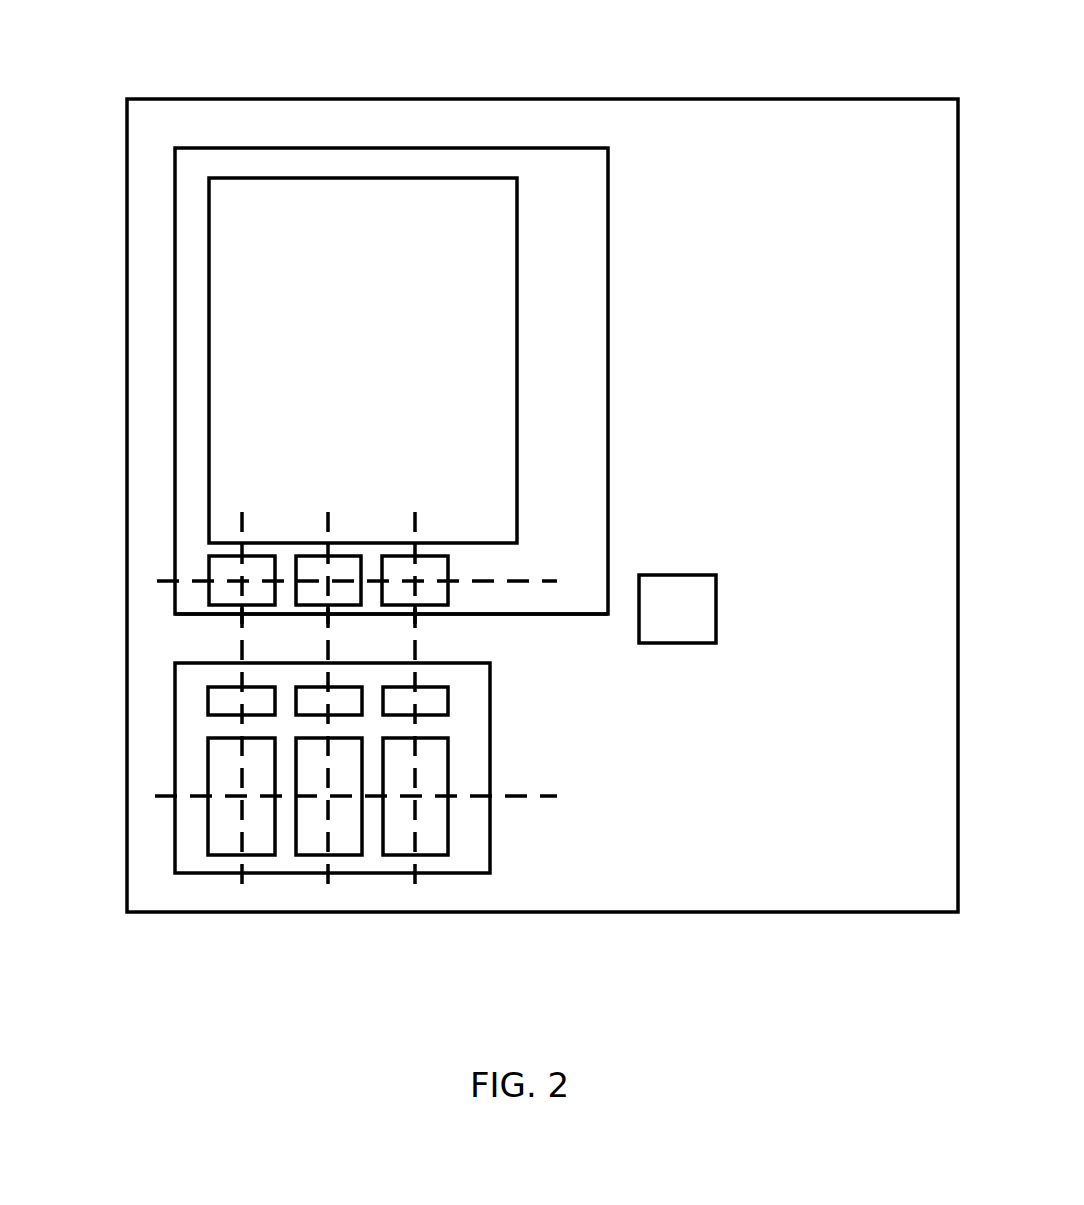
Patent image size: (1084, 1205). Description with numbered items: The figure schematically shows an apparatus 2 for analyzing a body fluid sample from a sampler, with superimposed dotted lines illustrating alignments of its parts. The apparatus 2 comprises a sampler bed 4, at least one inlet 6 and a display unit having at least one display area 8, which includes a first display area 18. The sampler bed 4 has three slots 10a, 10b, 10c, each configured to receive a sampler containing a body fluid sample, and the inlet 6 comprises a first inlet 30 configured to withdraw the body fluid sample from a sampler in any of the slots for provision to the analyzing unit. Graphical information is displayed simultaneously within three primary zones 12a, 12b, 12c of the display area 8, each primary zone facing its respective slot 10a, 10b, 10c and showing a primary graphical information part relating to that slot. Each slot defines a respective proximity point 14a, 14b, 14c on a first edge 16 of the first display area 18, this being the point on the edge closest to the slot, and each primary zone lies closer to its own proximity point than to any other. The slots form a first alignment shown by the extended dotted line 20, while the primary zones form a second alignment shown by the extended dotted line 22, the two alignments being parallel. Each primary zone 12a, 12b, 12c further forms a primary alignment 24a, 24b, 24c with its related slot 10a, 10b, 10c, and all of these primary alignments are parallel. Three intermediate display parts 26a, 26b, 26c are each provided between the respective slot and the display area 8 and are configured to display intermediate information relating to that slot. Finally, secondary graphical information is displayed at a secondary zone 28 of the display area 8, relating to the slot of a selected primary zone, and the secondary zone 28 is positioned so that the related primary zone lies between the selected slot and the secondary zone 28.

The apparatus 2 is at (600, 99).
The sampler bed 4 is at (472, 875).
The inlet 6 is at (742, 561).
The display area 8 is at (524, 381).
The slot 10a is at (225, 857).
The slot 10b is at (315, 857).
The slot 10c is at (403, 857).
The primary zone 12a is at (227, 556).
The primary zone 12b is at (311, 556).
The primary zone 12c is at (398, 556).
The proximity point 14a is at (237, 614).
The proximity point 14b is at (328, 614).
The proximity point 14c is at (415, 614).
The first edge 16 is at (578, 614).
The first display area 18 is at (608, 278).
The dotted line 20 is at (520, 784).
The dotted line 22 is at (517, 581).
The primary alignment 24a is at (242, 512).
The primary alignment 24b is at (328, 512).
The primary alignment 24c is at (415, 513).
The intermediate display part 26a is at (208, 700).
The intermediate display part 26b is at (343, 687).
The intermediate display part 26c is at (448, 700).
The secondary zone 28 is at (209, 358).
The first inlet 30 is at (705, 575).